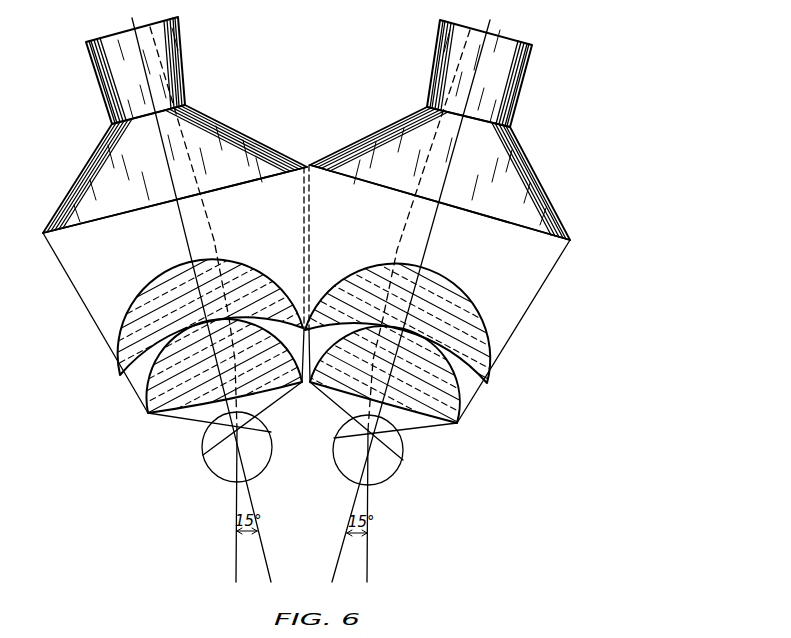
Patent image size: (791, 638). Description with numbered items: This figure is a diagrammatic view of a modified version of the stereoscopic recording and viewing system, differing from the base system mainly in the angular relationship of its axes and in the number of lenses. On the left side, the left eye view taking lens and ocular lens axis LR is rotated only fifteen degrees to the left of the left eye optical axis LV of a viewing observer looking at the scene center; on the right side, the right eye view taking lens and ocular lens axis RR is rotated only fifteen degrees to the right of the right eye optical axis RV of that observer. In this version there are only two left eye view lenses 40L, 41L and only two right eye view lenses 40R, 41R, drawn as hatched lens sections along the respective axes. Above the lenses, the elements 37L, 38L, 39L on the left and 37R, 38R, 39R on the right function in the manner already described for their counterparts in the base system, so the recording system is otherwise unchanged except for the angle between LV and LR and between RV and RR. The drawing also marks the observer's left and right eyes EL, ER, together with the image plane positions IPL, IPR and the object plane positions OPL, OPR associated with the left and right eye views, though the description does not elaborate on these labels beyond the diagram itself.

The left eye view element 37L is at (105, 82).
The right eye view element 37R is at (516, 93).
The left eye view element 38L is at (205, 191).
The right eye view element 38R is at (412, 191).
The left eye view element 39L is at (108, 228).
The right eye view element 39R is at (520, 231).
The left eye view lens 40L is at (152, 300).
The right eye view lens 40R is at (478, 305).
The left eye view lens 41L is at (150, 403).
The right eye view lens 41R is at (460, 405).
The left image plane IPL is at (301, 388).
The right image plane IPR is at (312, 392).
The left object plane OPL is at (195, 418).
The right object plane OPR is at (430, 427).
The left eye EL is at (205, 455).
The right eye ER is at (401, 460).
The left eye optical axis LV is at (233, 565).
The left eye view taking lens and ocular lens axis LR is at (278, 566).
The right eye view taking lens and ocular lens axis RR is at (330, 566).
The right eye optical axis RV is at (370, 568).